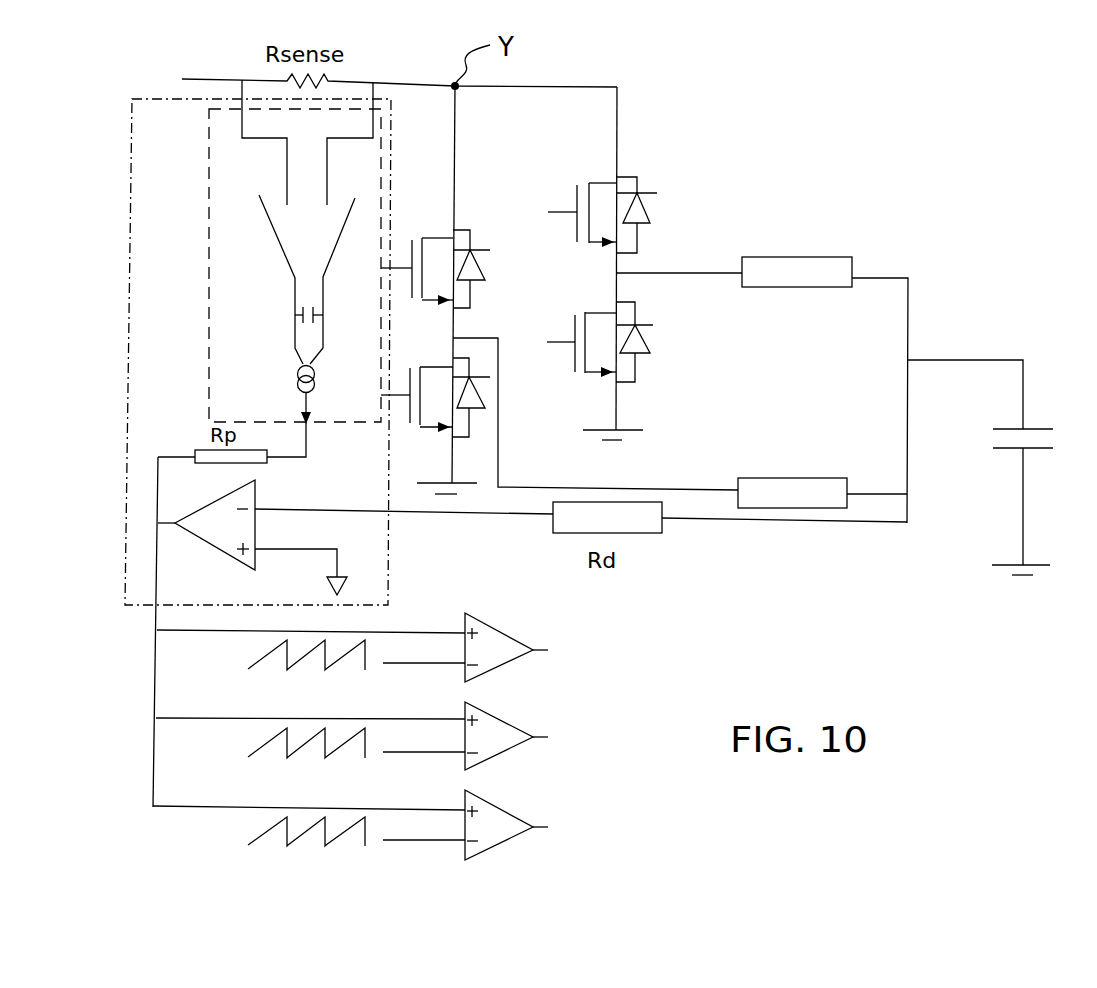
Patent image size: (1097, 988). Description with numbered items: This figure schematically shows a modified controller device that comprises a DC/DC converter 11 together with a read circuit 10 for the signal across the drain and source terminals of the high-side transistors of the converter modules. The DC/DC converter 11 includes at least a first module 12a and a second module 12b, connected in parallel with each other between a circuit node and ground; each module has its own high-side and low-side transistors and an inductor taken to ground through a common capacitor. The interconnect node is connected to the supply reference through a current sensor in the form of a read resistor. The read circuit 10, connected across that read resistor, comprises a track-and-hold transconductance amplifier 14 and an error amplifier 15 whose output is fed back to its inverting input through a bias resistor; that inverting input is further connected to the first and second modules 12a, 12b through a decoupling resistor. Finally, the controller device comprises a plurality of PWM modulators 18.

The read circuit 10 is at (150, 143).
The DC/DC converter 11 is at (892, 207).
The first module 12a is at (657, 170).
The second module 12b is at (486, 232).
The track-and-hold transconductance amplifier 14 is at (210, 245).
The error amplifier 15 is at (215, 528).
The PWM modulators 18 is at (502, 652).